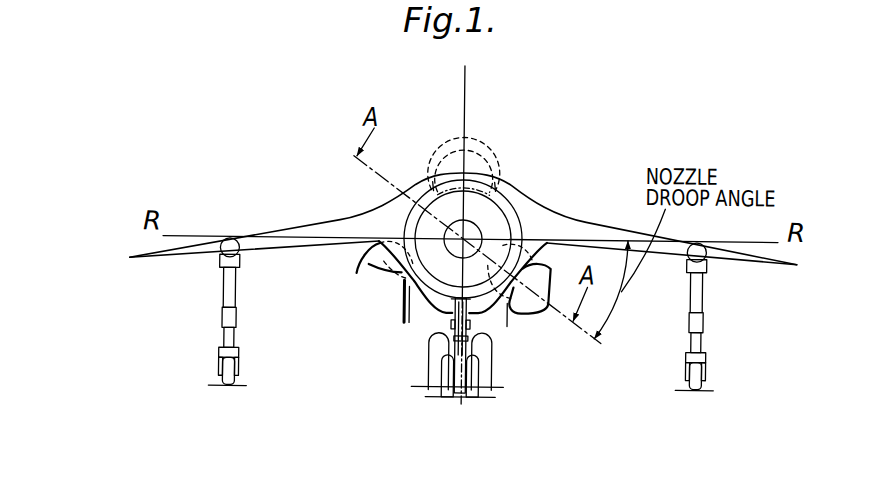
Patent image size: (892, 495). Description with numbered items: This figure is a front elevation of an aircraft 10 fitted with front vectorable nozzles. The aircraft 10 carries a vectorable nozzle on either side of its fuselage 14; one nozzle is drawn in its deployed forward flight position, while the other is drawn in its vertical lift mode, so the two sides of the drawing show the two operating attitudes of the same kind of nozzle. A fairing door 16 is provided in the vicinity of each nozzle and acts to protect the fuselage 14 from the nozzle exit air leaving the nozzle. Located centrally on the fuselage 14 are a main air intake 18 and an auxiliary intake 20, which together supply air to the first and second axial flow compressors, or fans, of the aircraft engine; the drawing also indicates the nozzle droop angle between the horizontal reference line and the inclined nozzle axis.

The aircraft 10 is at (412, 187).
The fuselage 14 is at (411, 289).
The fairing door 16 is at (404, 303).
The main air intake 18 is at (487, 210).
The auxiliary intake 20 is at (515, 216).